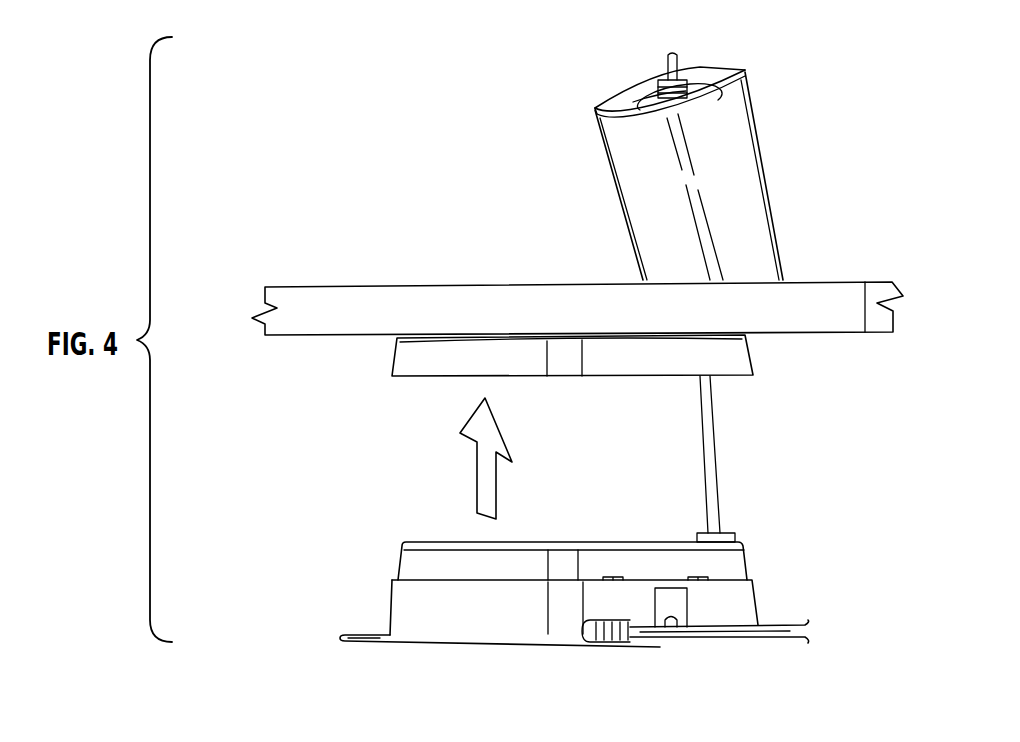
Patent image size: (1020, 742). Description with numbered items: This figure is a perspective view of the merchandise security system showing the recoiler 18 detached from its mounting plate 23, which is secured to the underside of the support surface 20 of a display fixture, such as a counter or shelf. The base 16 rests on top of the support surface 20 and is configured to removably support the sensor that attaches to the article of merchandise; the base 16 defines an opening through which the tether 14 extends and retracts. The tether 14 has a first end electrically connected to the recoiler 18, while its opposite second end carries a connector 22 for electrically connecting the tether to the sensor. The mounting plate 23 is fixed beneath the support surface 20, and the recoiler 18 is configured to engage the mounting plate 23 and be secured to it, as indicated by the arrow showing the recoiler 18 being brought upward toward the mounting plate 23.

The tether 14 is at (712, 478).
The base 16 is at (745, 138).
The recoiler 18 is at (383, 582).
The support surface 20 is at (433, 285).
The connector 22 is at (667, 87).
The mounting plate 23 is at (407, 358).